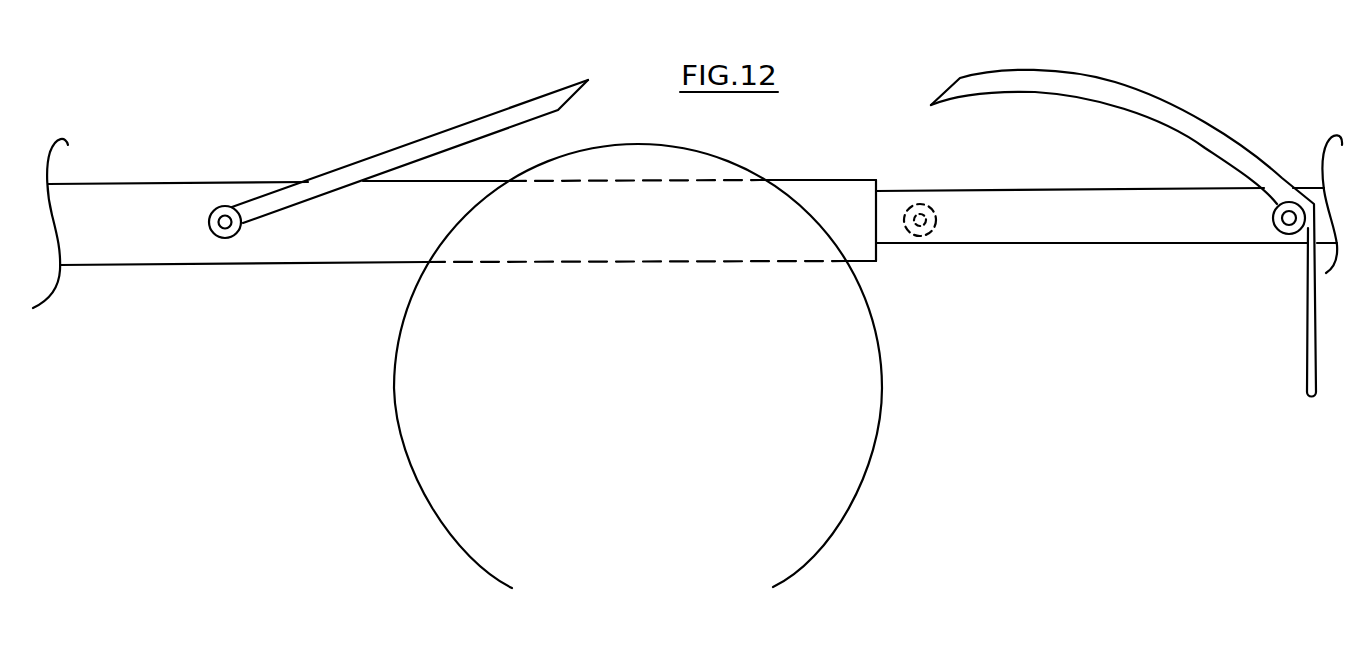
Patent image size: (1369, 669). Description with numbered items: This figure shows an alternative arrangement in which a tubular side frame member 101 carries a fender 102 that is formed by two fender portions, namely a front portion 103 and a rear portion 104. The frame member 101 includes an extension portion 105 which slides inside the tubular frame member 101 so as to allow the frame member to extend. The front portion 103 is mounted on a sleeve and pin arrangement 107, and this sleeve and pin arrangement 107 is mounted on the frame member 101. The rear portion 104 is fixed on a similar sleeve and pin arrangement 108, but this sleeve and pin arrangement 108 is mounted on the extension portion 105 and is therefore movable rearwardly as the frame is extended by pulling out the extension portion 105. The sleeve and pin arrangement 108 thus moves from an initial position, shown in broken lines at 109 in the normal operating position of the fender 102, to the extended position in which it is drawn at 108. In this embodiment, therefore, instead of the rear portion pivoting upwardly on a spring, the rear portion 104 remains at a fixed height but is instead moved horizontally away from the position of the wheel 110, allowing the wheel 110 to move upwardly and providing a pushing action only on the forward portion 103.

The side frame member 101 is at (294, 264).
The fender 102 is at (957, 70).
The front portion 103 is at (490, 113).
The rear portion 104 is at (1163, 98).
The extension portion 105 is at (1052, 245).
The sleeve and pin arrangement 107 is at (214, 233).
The sleeve and pin arrangement 108 is at (1278, 228).
The initial position 109 is at (916, 237).
The wheel 110 is at (881, 372).